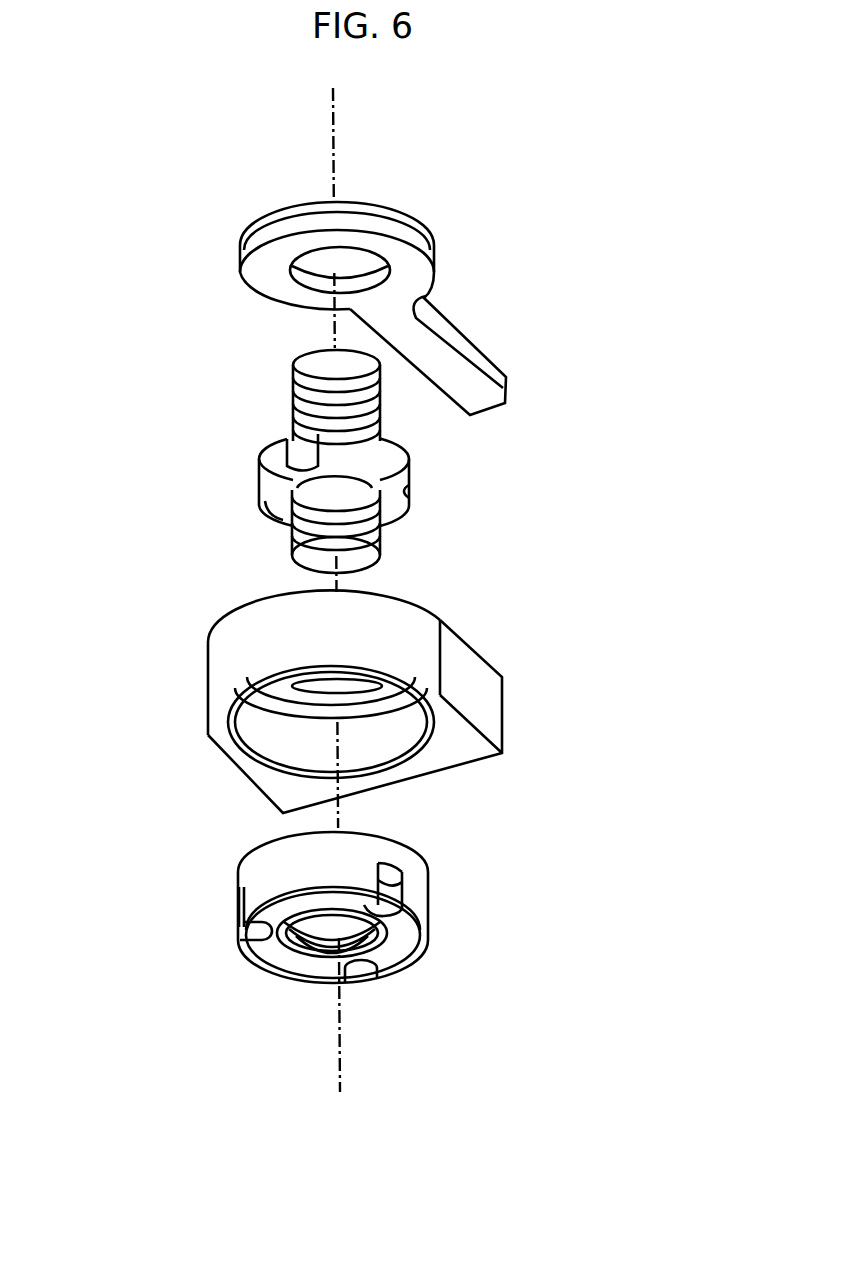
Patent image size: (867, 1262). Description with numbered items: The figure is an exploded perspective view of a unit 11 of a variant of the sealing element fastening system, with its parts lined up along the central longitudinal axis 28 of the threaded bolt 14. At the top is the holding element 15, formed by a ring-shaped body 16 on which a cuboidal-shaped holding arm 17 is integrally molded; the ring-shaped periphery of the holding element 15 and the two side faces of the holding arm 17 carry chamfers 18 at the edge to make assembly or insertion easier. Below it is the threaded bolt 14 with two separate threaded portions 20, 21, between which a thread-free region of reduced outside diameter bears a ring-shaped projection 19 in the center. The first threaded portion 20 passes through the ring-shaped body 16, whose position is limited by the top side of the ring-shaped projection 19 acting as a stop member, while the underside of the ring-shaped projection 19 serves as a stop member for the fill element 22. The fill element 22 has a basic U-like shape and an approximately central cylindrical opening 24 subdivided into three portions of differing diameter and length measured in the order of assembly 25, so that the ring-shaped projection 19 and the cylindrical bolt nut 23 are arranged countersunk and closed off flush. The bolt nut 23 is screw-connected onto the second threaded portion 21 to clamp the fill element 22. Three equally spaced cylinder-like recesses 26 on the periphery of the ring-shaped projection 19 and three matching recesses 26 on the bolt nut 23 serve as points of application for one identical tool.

The unit 11 is at (613, 116).
The threaded bolt 14 is at (250, 461).
The holding element 15 is at (343, 308).
The ring-shaped body 16 is at (397, 257).
The holding arm 17 is at (445, 373).
The chamfers 18 is at (242, 262).
The ring-shaped projection 19 is at (397, 518).
The first threaded portion 20 is at (290, 366).
The second threaded portion 21 is at (290, 523).
The fill element 22 is at (291, 711).
The bolt nut 23 is at (194, 992).
The cylindrical opening 24 is at (380, 742).
The order of assembly 25 is at (723, 525).
The recesses 26 is at (300, 458).
The central longitudinal axis 28 is at (336, 141).